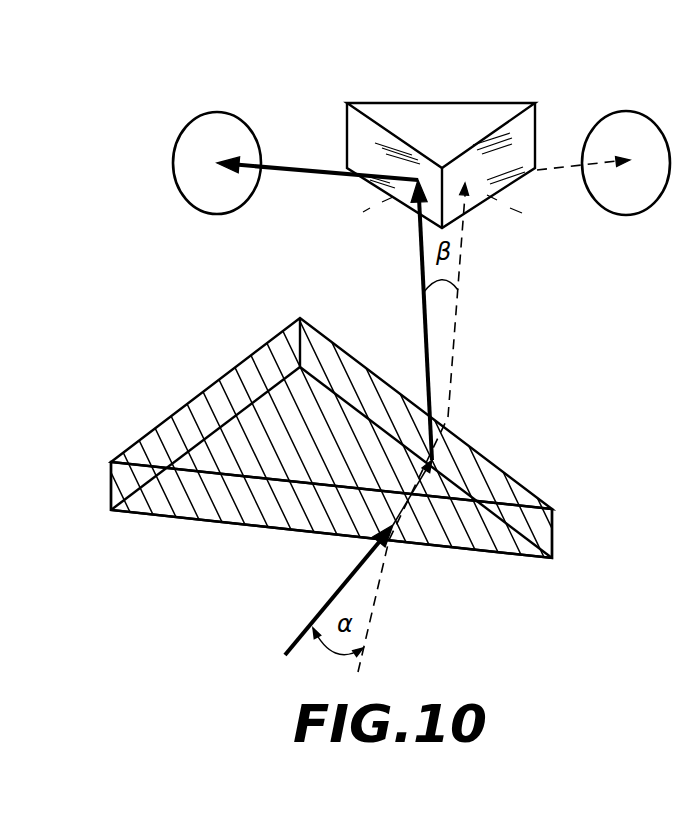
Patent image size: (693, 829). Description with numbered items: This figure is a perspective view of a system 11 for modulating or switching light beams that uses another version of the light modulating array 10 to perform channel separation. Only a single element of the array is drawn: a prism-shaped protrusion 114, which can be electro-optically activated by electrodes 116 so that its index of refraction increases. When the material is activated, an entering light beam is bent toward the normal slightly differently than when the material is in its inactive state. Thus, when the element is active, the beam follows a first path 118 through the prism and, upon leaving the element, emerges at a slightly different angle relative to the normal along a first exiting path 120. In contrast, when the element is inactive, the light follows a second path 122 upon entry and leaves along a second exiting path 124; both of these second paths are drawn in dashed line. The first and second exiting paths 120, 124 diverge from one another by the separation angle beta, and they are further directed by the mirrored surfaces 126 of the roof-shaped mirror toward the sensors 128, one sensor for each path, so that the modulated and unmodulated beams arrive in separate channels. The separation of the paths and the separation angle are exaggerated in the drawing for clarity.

The light modulating array 10 is at (342, 435).
The system for modulating or switching light beams 11 is at (603, 388).
The prism-shaped protrusion 114 is at (285, 404).
The electrodes 116 is at (190, 418).
The first path 118 is at (382, 395).
The first exiting path 120 is at (422, 307).
The second path 122 is at (425, 487).
The second exiting path 124 is at (458, 337).
The mirrored surfaces 126 is at (362, 150).
The sensors 128 is at (220, 135).